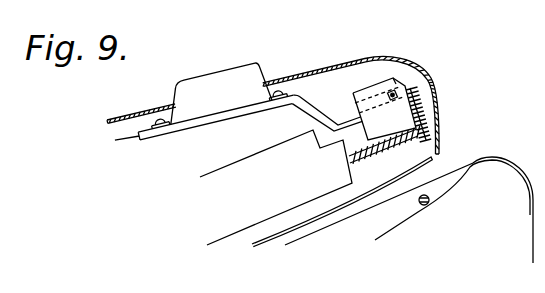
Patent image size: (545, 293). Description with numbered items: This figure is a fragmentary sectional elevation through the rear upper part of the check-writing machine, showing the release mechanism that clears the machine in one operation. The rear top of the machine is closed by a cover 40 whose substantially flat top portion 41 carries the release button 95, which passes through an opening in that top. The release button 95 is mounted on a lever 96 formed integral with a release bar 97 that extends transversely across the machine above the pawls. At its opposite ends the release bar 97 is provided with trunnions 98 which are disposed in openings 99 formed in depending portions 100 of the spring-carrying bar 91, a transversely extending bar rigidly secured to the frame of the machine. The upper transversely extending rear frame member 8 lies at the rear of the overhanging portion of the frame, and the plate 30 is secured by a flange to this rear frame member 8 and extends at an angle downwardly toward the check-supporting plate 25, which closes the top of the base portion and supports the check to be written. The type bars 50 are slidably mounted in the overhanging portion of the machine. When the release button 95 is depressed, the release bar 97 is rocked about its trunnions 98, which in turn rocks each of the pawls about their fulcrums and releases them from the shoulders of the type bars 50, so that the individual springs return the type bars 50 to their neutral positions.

The rear frame member 8 is at (413, 118).
The check-supporting plate 25 is at (456, 171).
The plate 30 is at (349, 198).
The cover 40 is at (134, 109).
The top portion 41 is at (353, 62).
The type bars 50 is at (284, 188).
The spring-carrying bar 91 is at (381, 82).
The release button 95 is at (215, 71).
The lever 96 is at (209, 128).
The release bar 97 is at (268, 80).
The trunnions 98 is at (397, 92).
The openings 99 is at (384, 109).
The depending portions 100 is at (360, 102).